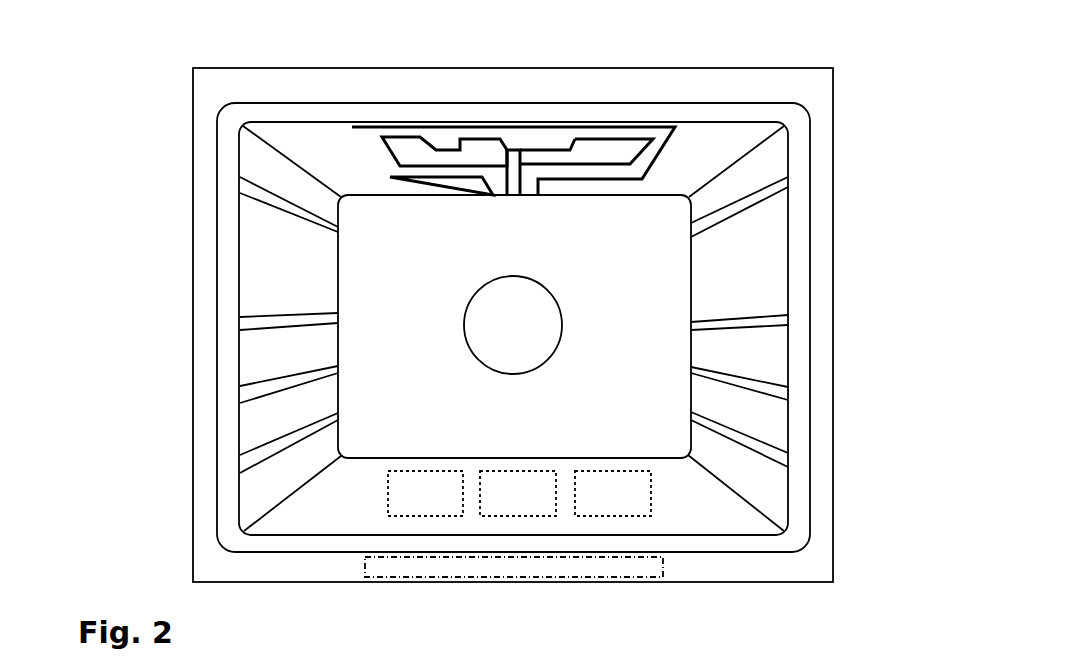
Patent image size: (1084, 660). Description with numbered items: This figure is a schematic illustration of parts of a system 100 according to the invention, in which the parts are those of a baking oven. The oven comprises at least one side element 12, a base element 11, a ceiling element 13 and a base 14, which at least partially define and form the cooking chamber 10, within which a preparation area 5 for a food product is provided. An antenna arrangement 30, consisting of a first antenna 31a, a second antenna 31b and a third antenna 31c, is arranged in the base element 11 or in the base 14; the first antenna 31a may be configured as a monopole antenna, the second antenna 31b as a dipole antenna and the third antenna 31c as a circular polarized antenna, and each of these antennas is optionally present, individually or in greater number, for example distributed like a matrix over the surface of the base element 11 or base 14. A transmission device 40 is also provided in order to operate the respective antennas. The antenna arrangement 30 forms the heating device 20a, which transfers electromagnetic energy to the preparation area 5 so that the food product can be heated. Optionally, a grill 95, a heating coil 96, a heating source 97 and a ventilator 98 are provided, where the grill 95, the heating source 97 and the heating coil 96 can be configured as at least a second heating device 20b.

The system 100 is at (150, 142).
The preparation area 5 is at (410, 326).
The cooking chamber 10 is at (360, 358).
The base element 11 is at (566, 327).
The side element 12 is at (263, 408).
The ceiling element 13 is at (725, 150).
The base 14 is at (725, 517).
The heating device 20a is at (237, 518).
The second heating device 20b is at (565, 188).
The antenna arrangement 30 is at (246, 518).
The first antenna 31a is at (425, 493).
The second antenna 31b is at (518, 493).
The third antenna 31c is at (613, 493).
The transmission device 40 is at (663, 570).
The grill 95 is at (598, 112).
The heating coil 96 is at (473, 164).
The heating source 97 is at (598, 112).
The ventilator 98 is at (464, 318).